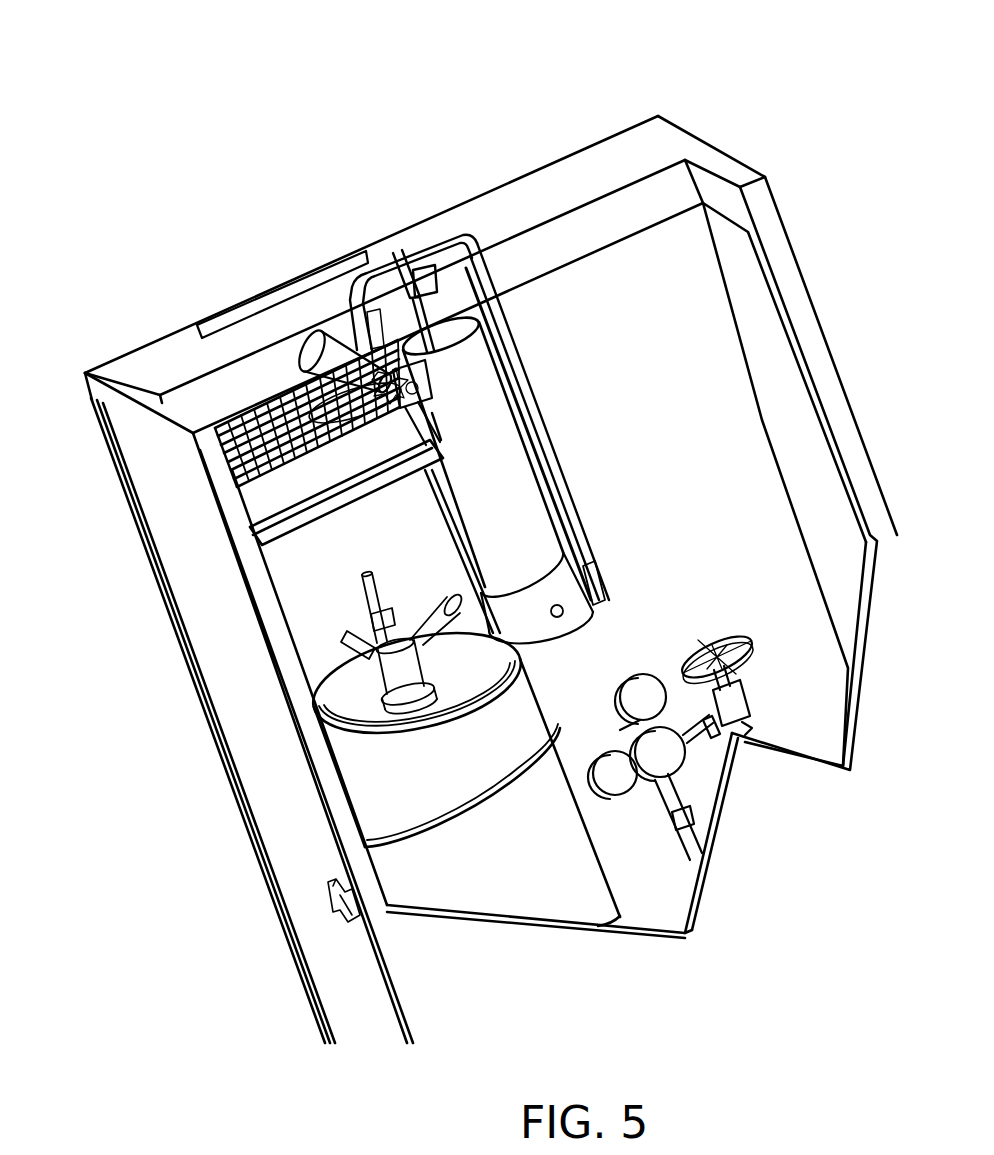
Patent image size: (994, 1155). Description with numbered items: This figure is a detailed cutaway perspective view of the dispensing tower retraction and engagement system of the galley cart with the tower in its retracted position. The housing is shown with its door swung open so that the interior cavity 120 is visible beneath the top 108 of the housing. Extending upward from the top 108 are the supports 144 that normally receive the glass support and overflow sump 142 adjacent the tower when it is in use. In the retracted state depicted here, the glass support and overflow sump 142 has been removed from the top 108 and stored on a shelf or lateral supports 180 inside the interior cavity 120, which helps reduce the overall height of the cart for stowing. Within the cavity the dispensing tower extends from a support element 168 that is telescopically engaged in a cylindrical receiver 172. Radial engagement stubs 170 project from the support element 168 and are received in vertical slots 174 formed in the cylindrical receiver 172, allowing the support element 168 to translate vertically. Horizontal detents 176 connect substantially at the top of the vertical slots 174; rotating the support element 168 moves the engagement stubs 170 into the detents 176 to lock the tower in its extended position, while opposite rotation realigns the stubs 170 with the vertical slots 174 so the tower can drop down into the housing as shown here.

The top 108 is at (637, 160).
The interior cavity 120 is at (670, 380).
The glass support and overflow sump 142 is at (277, 483).
The supports 144 is at (273, 287).
The support element 168 is at (580, 613).
The radial engagement stubs 170 is at (593, 566).
The cylindrical receiver 172 is at (455, 236).
The vertical slots 174 is at (410, 297).
The horizontal detents 176 is at (422, 277).
The shelf or lateral supports 180 is at (305, 523).